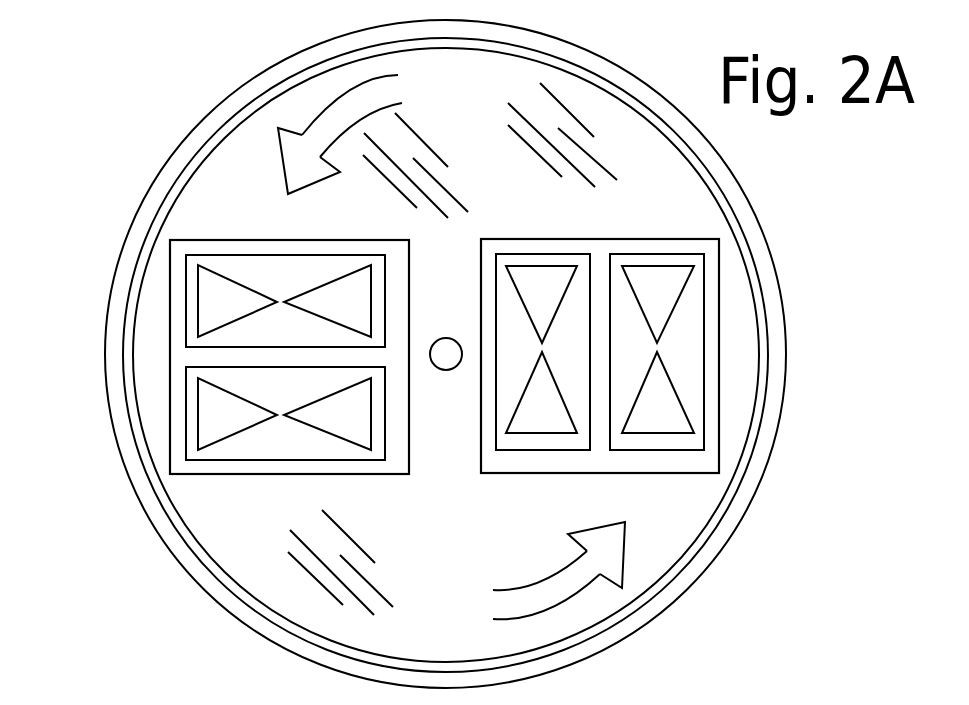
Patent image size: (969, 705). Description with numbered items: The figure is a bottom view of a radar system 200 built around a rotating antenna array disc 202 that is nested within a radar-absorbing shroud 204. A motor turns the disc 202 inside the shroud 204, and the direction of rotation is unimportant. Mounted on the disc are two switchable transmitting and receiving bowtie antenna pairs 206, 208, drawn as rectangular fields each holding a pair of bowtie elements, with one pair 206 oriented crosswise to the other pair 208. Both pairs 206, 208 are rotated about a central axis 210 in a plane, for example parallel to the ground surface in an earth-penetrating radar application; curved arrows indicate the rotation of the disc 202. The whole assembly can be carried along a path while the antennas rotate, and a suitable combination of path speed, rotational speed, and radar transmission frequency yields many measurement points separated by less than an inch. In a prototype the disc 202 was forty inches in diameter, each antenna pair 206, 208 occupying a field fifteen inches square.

The radar system 200 is at (78, 114).
The rotating antenna array disc 202 is at (236, 568).
The radar-absorbing shroud 204 is at (171, 543).
The bowtie antenna pair 206 is at (305, 473).
The bowtie antenna pair 208 is at (543, 468).
The axis 210 is at (440, 364).